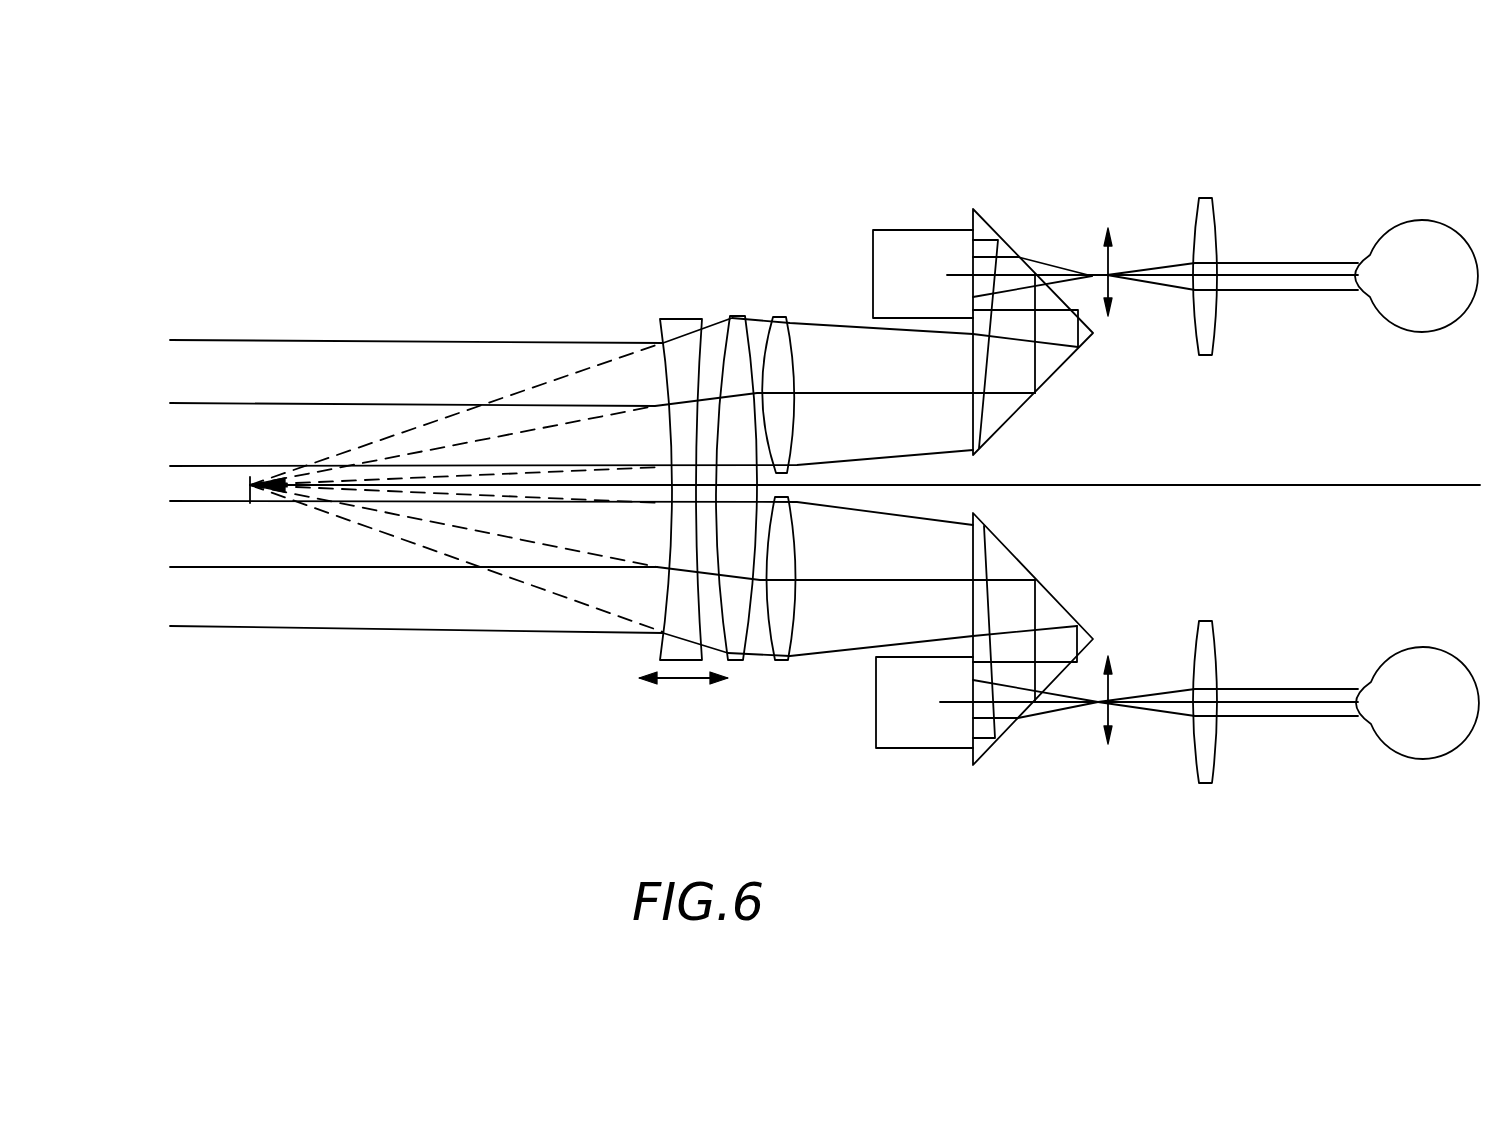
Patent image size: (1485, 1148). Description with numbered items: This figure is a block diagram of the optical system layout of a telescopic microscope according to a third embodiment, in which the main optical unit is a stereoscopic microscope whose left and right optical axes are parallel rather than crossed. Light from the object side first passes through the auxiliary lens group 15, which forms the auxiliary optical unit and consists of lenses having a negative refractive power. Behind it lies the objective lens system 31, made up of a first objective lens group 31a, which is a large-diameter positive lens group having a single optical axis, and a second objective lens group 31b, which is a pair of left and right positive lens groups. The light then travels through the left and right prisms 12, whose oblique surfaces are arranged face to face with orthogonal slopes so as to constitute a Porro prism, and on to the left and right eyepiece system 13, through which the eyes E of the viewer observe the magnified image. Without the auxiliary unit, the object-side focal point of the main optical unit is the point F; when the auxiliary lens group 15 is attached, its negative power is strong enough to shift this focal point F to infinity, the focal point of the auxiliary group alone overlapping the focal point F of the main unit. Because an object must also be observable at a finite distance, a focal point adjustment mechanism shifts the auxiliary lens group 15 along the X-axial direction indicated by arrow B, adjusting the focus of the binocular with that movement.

The prism 12 is at (1012, 244).
The eyepiece system 13 is at (1210, 198).
The auxiliary lens group 15 is at (685, 318).
The objective lens system 31 is at (738, 530).
The first objective lens group 31a is at (734, 663).
The second objective lens group 31b is at (777, 318).
The arrow B is at (683, 698).
The eyes E is at (1430, 334).
The focal point F is at (249, 482).